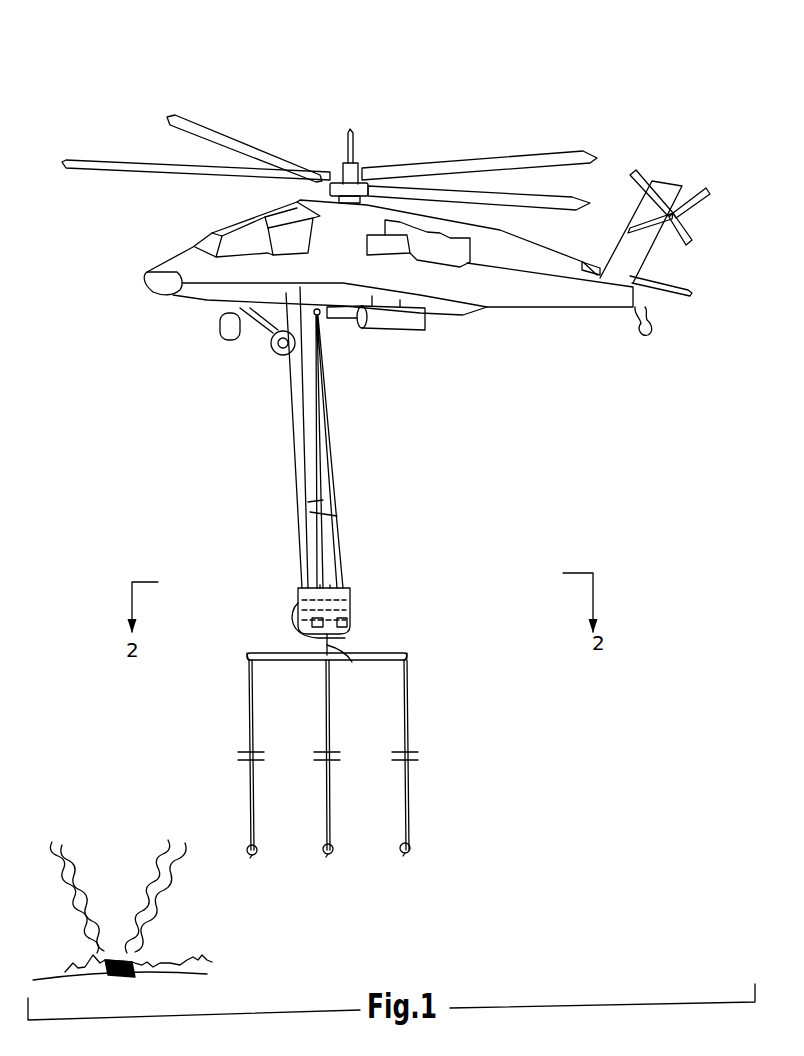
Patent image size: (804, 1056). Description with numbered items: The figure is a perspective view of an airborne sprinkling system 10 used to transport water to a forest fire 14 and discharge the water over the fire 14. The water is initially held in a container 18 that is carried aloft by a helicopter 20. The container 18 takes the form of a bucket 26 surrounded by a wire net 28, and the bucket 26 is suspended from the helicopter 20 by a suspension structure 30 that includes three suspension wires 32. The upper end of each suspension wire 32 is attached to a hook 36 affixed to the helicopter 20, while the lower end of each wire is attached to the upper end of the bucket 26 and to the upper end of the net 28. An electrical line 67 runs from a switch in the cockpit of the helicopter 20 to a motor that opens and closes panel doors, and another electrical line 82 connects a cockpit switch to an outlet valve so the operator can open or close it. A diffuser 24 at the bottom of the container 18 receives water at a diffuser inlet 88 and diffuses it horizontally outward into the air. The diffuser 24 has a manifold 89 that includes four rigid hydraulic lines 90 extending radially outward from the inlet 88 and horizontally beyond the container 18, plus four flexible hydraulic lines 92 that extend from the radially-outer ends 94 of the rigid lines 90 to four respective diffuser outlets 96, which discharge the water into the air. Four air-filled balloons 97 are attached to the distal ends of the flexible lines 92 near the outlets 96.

The airborne sprinkling system 10 is at (548, 98).
The forest fire 14 is at (135, 955).
The container 18 is at (351, 583).
The helicopter 20 is at (655, 268).
The diffuser 24 is at (485, 633).
The bucket 26 is at (352, 600).
The wire net 28 is at (352, 612).
The suspension structure 30 is at (333, 424).
The suspension wires 32 is at (335, 517).
The hook 36 is at (322, 316).
The electrical line 67 is at (307, 375).
The electrical line 82 is at (295, 422).
The diffuser inlet 88 is at (345, 661).
The manifold 89 is at (485, 656).
The rigid hydraulic lines 90 is at (285, 653).
The flexible hydraulic lines 92 is at (249, 714).
The radially-outer ends 94 is at (249, 654).
The diffuser outlets 96 is at (256, 856).
The air-filled balloons 97 is at (257, 850).